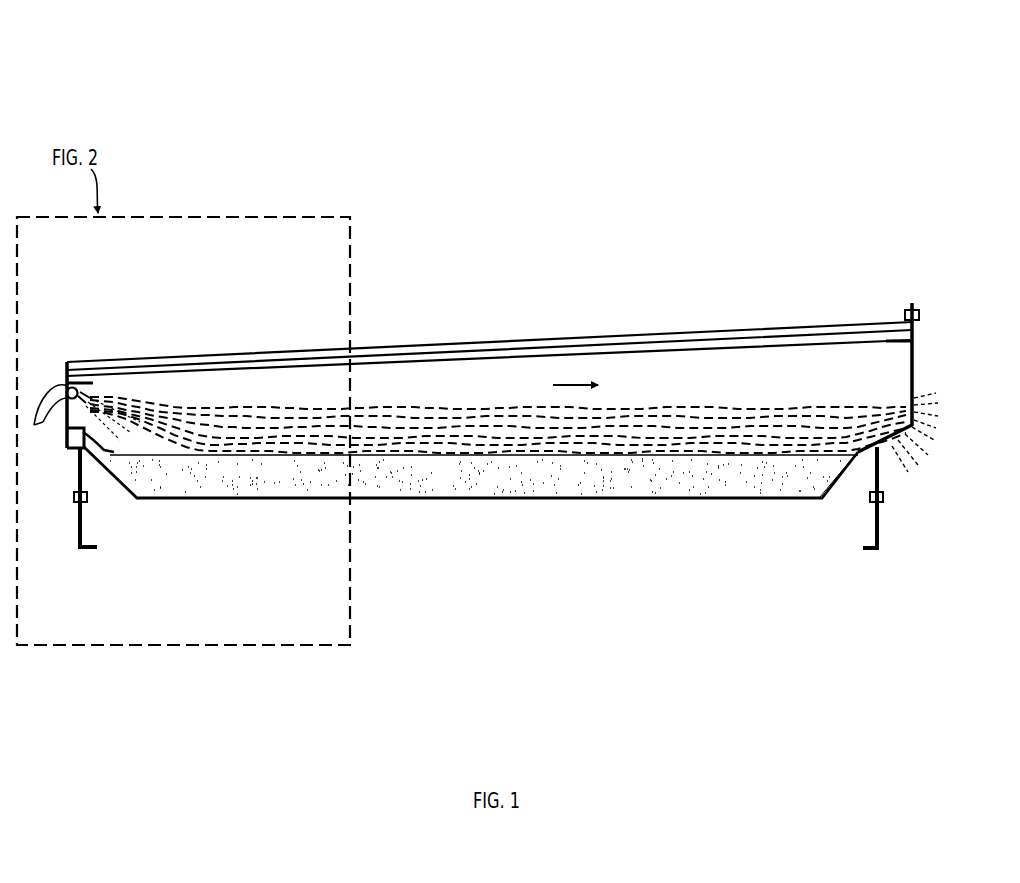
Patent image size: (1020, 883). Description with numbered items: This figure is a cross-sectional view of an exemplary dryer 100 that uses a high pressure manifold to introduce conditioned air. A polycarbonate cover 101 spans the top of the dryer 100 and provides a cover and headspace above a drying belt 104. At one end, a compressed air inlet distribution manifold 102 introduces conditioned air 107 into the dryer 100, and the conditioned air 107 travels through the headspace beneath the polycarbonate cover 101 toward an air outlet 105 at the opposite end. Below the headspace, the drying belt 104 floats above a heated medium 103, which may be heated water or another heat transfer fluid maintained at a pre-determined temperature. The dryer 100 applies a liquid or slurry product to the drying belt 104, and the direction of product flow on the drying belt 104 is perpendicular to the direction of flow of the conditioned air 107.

The dryer 100 is at (300, 83).
The polycarbonate cover 101 is at (446, 339).
The compressed air inlet distribution manifold 102 is at (41, 433).
The heated medium 103 is at (568, 481).
The drying belt 104 is at (795, 462).
The air outlet 105 is at (879, 442).
The conditioned air 107 is at (660, 441).